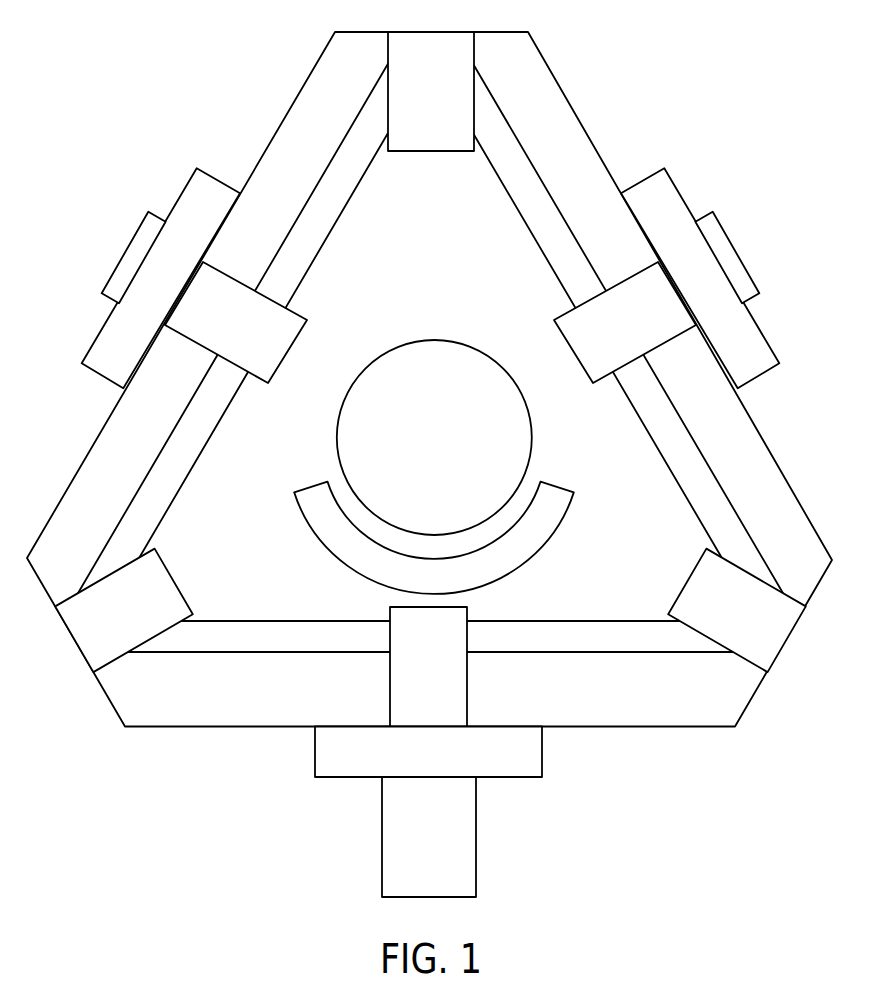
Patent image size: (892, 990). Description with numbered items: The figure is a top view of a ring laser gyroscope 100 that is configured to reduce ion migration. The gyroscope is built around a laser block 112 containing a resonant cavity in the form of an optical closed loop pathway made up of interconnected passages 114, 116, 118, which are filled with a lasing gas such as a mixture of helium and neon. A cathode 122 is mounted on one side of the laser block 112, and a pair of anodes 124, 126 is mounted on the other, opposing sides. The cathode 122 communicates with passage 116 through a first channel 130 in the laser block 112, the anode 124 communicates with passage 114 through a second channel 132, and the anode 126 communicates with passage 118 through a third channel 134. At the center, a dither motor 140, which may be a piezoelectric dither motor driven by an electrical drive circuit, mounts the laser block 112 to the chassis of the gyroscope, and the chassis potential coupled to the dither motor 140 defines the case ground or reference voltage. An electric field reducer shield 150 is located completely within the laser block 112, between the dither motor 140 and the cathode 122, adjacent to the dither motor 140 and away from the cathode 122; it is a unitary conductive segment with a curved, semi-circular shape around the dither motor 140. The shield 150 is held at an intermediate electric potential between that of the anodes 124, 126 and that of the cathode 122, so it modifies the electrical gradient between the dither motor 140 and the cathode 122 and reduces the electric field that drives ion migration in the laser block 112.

The ring laser gyroscope 100 is at (114, 124).
The laser block 112 is at (592, 129).
The passage 114 is at (190, 432).
The passage 116 is at (620, 637).
The passage 118 is at (678, 437).
The cathode 122 is at (465, 835).
The anode 124 is at (112, 332).
The anode 126 is at (750, 332).
The first channel 130 is at (398, 678).
The second channel 132 is at (253, 303).
The third channel 134 is at (607, 298).
The dither motor 140 is at (460, 450).
The electric field reducer shield 150 is at (312, 525).